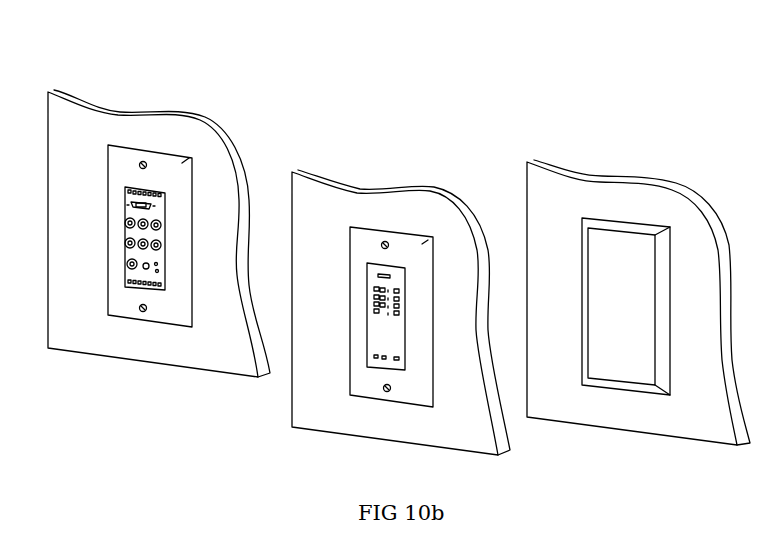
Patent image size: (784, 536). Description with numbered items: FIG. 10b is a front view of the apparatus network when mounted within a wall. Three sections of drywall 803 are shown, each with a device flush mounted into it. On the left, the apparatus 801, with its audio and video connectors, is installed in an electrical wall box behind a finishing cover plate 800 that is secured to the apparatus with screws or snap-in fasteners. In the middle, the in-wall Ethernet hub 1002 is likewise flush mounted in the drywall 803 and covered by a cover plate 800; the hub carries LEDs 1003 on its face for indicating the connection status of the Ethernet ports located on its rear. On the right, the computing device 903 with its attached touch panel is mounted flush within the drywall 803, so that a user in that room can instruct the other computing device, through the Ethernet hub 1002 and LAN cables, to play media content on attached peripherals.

The drywall 803 is at (542, 190).
The cover plate 800 is at (357, 282).
The apparatus 801 is at (130, 244).
The in-wall Ethernet hub 1002 is at (393, 340).
The LEDs 1003 is at (395, 315).
The computing device 903 is at (598, 247).